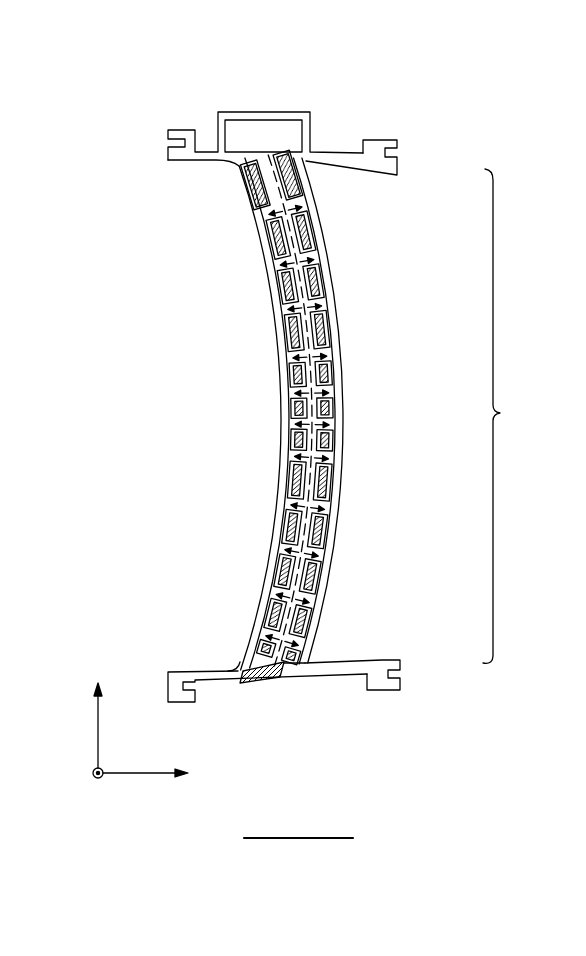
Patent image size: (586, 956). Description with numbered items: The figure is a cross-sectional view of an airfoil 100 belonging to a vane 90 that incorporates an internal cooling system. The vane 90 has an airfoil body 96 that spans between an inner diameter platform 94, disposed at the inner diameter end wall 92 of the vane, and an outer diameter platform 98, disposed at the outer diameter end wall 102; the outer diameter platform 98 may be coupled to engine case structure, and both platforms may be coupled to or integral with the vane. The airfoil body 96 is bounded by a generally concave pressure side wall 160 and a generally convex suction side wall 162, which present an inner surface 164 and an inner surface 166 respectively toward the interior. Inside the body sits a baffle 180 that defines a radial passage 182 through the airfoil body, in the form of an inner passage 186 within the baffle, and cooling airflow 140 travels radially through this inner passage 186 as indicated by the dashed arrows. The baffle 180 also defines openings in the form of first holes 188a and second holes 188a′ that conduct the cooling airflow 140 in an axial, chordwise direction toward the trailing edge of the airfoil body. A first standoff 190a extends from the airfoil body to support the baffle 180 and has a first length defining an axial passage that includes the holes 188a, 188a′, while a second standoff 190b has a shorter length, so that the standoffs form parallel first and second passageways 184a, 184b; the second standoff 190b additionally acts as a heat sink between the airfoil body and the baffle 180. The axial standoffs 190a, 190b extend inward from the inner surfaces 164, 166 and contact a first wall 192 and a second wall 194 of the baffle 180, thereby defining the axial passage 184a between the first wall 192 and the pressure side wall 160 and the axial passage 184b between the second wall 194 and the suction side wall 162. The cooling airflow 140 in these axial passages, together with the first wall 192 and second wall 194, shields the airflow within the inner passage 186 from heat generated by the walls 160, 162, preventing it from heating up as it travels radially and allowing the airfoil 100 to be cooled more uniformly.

The airfoil 100 is at (282, 451).
The vane 90 is at (117, 128).
The inner diameter end wall 92 is at (233, 672).
The inner diameter platform 94 is at (382, 658).
The airfoil body 96 is at (507, 416).
The outer diameter platform 98 is at (377, 158).
The outer diameter end wall 102 is at (238, 168).
The cooling airflow 140 is at (303, 170).
The pressure side wall 160 is at (268, 296).
The suction side wall 162 is at (334, 312).
The inner surface of pressure side wall 164 is at (283, 240).
The inner surface of suction side wall 166 is at (320, 250).
The baffle 180 is at (272, 682).
The radial passage 182 is at (278, 320).
The inner passage 186 is at (224, 346).
The first axial passage 184a is at (285, 420).
The second axial passage 184b is at (283, 457).
The first holes 188a is at (287, 427).
The second holes 188a′ is at (280, 477).
The first standoff 190a is at (333, 495).
The second standoff 190b is at (340, 447).
The first wall of baffle 192 is at (284, 398).
The second wall of baffle 194 is at (340, 395).